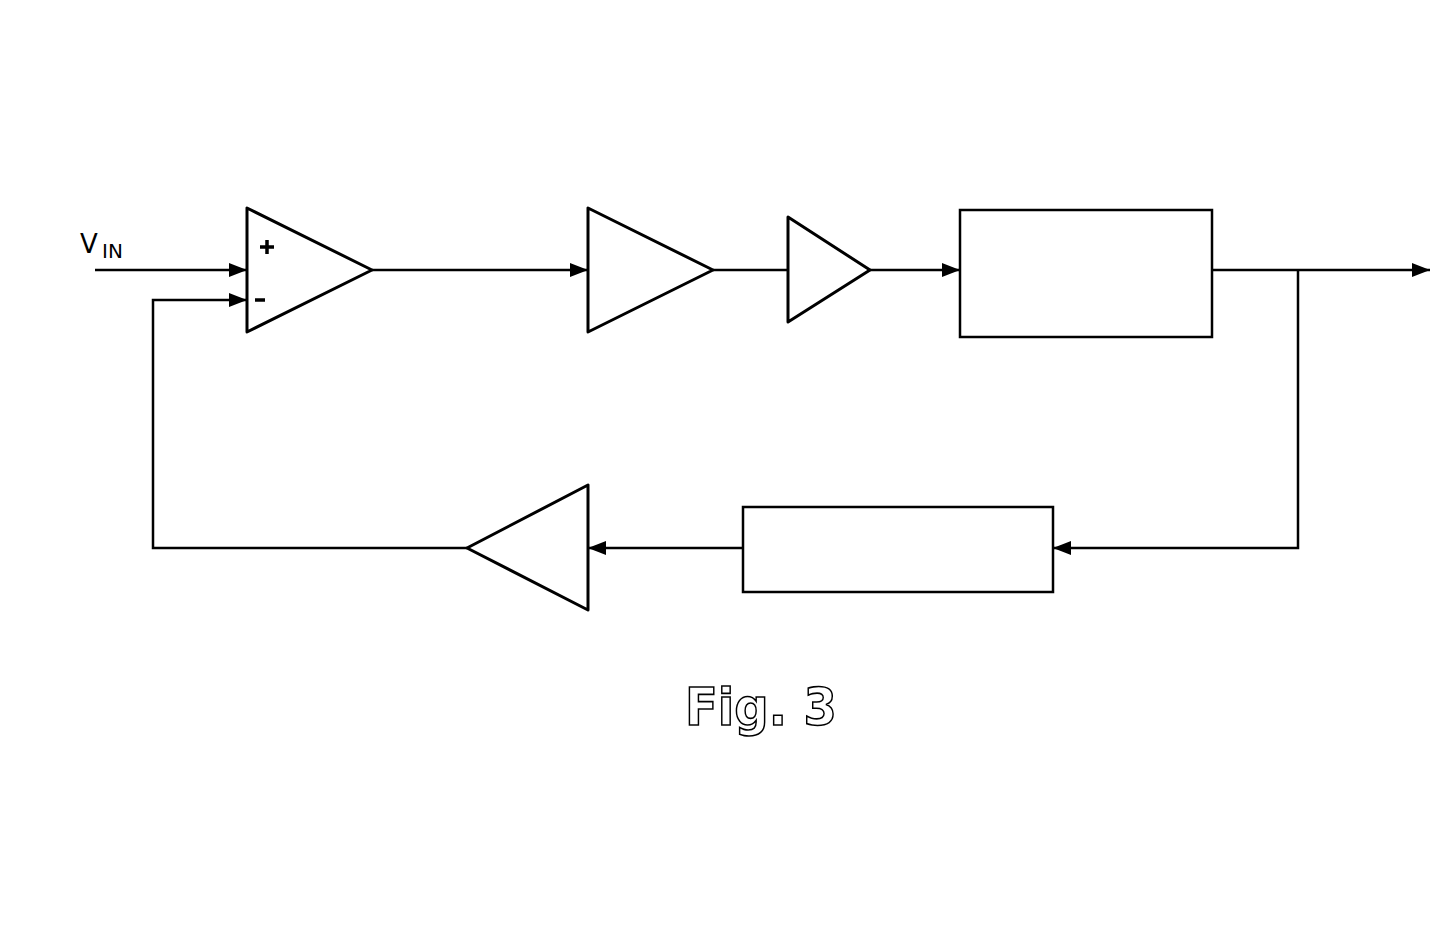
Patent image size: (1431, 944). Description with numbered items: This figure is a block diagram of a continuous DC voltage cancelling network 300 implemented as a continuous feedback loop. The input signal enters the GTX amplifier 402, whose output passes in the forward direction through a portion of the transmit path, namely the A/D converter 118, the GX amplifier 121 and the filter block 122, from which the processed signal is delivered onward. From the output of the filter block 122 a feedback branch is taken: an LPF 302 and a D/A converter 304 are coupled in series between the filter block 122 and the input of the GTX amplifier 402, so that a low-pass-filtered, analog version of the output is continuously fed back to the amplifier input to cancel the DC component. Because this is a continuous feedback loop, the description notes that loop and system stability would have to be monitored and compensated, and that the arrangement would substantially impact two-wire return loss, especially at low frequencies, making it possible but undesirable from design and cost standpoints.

The continuous DC voltage cancelling network 300 is at (425, 472).
The GTX amplifier 402 is at (322, 245).
The A/D converter 118 is at (658, 247).
The GX amplifier 121 is at (837, 245).
The filter block 122 is at (1043, 210).
The LPF 302 is at (872, 507).
The D/A converter 304 is at (525, 520).